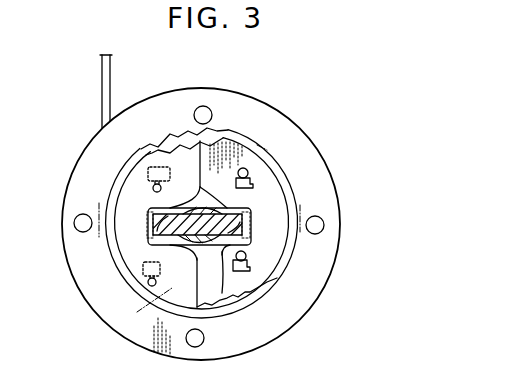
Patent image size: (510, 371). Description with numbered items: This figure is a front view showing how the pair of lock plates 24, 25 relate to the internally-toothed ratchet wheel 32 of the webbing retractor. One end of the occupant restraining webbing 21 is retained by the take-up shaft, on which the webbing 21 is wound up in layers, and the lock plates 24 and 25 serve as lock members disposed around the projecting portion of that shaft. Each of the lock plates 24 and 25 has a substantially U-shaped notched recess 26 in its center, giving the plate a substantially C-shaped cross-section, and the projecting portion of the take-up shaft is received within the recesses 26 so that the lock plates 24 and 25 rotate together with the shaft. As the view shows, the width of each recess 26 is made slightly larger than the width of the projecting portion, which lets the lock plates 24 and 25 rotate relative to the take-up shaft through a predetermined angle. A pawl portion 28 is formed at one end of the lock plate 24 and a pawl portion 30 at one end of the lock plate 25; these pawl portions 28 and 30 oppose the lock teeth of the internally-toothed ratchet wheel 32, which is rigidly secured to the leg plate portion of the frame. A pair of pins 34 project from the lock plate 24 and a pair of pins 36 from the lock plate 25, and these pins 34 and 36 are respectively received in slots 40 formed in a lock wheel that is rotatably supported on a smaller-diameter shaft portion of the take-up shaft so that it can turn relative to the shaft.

The occupant restraining webbing 21 is at (101, 74).
The lock plate 24 is at (132, 260).
The lock plate 25 is at (266, 236).
The notched recess 26 is at (143, 221).
The pawl portion 28 is at (149, 149).
The pawl portion 30 is at (258, 297).
The internally-toothed ratchet wheel 32 is at (338, 199).
The pins 34 is at (154, 190).
The pins 36 is at (244, 168).
The slots 40 is at (171, 167).